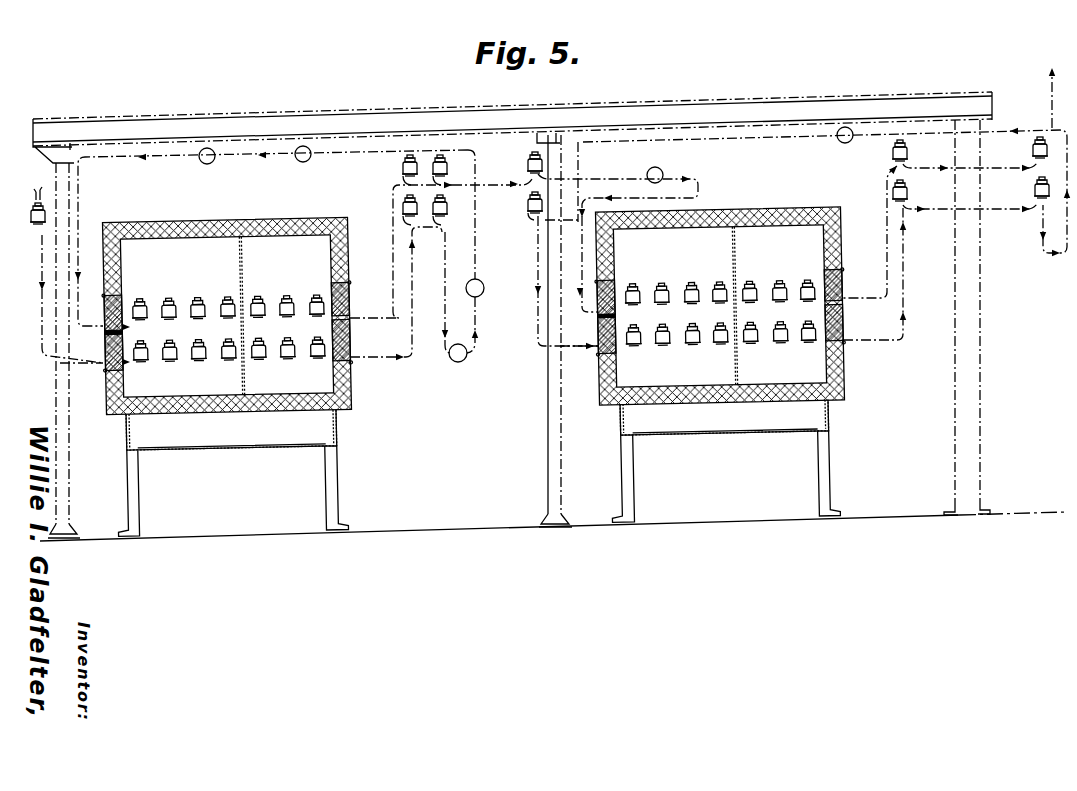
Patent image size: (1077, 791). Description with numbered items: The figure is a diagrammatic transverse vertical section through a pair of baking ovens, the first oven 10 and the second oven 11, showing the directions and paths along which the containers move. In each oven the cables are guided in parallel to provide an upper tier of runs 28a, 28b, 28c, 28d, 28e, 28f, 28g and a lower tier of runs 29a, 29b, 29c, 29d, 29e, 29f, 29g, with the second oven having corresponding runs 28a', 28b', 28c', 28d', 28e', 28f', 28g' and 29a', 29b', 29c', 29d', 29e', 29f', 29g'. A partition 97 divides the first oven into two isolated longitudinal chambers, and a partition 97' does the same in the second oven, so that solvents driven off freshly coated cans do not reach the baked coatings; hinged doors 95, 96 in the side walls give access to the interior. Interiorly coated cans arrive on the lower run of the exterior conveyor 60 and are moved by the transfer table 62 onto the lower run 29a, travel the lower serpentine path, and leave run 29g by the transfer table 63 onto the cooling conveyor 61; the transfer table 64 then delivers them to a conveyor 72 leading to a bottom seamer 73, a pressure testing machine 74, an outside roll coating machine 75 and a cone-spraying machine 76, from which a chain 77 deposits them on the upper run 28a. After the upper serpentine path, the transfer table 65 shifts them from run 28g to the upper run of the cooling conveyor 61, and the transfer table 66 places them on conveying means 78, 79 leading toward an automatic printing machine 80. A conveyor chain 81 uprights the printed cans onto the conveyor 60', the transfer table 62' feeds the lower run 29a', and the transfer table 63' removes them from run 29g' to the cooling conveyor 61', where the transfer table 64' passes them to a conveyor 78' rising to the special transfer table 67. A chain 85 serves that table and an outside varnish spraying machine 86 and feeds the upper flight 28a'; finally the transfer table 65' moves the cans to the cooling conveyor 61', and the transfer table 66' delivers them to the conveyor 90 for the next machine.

The first oven 10 is at (234, 365).
The second oven 11 is at (745, 350).
The upper run of first oven conveyor 28a is at (150, 316).
The upper run 28b is at (179, 316).
The upper run 28c is at (207, 315).
The upper run 28d is at (228, 299).
The upper run 28e is at (267, 314).
The upper run 28f is at (296, 313).
The upper run of last oven conveyor 28g is at (310, 297).
The upper flight of first conveyor of second oven 28a' is at (644, 303).
The upper run of second oven 28b' is at (673, 303).
The upper run of second oven 28c' is at (702, 302).
The upper run of second oven 28d' is at (717, 283).
The upper run of second oven 28e' is at (758, 300).
The upper run of second oven 28f' is at (787, 299).
The upper run of last conveyor of second oven 28g' is at (803, 280).
The lower run of first oven conveyor 29a is at (145, 364).
The lower run 29b is at (174, 368).
The lower run 29c is at (200, 359).
The lower run 29d is at (226, 365).
The lower run 29e is at (260, 358).
The lower run 29f is at (286, 365).
The lower run of last oven conveyor 29g is at (316, 357).
The lower run of second oven conveyor 29a' is at (634, 349).
The lower run of second oven 29b' is at (662, 352).
The lower run of second oven 29c' is at (697, 344).
The lower run of second oven 29d' is at (719, 351).
The lower run of second oven 29e' is at (754, 342).
The lower run of second oven 29f' is at (777, 350).
The lower run of last conveyor of second oven 29g' is at (806, 340).
The endless conveyor 60 is at (54, 299).
The exteriorly disposed conveyor 60' is at (553, 281).
The cooling conveyor 61 is at (401, 251).
The cooling conveyor 61' is at (870, 232).
The transfer table 62 is at (81, 381).
The transfer table 62' is at (579, 362).
The transfer table 63 is at (362, 354).
The transfer table 63' is at (859, 339).
The transfer table 64 is at (425, 207).
The transfer table 64' is at (970, 197).
The transfer table 65 is at (355, 297).
The transfer table 65' is at (852, 284).
The transfer table 66 is at (273, 222).
The transfer table 66' is at (970, 156).
The transfer table 67 is at (1038, 207).
The conveyor 72 is at (444, 288).
The bottom seamer 73 is at (460, 362).
The pressure testing machine 74 is at (484, 291).
The outside roll coating machine 75 is at (300, 160).
The cone-spraying machine 76 is at (201, 161).
The chain 77 is at (104, 331).
The conveyor 78 is at (492, 169).
The conveyor 78' is at (952, 173).
The conveying means 79 is at (615, 171).
The automatic printing machine 80 is at (661, 170).
The conveyor chain 81 is at (558, 220).
The chain 85 is at (774, 138).
The outside varnish spraying machine 86 is at (844, 142).
The conveyor 90 is at (1051, 93).
The hinged door 95 is at (104, 319).
The hinged door 96 is at (104, 352).
The partition 97 is at (255, 315).
The partition 97' is at (750, 305).